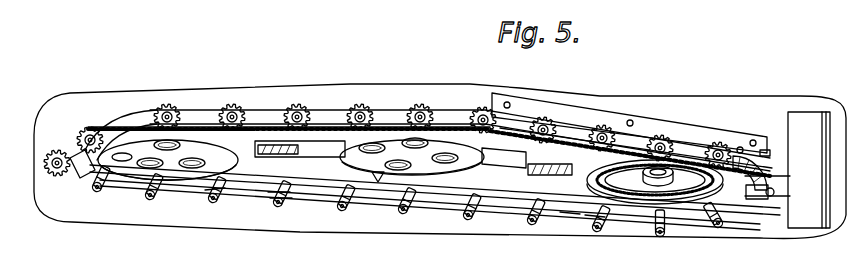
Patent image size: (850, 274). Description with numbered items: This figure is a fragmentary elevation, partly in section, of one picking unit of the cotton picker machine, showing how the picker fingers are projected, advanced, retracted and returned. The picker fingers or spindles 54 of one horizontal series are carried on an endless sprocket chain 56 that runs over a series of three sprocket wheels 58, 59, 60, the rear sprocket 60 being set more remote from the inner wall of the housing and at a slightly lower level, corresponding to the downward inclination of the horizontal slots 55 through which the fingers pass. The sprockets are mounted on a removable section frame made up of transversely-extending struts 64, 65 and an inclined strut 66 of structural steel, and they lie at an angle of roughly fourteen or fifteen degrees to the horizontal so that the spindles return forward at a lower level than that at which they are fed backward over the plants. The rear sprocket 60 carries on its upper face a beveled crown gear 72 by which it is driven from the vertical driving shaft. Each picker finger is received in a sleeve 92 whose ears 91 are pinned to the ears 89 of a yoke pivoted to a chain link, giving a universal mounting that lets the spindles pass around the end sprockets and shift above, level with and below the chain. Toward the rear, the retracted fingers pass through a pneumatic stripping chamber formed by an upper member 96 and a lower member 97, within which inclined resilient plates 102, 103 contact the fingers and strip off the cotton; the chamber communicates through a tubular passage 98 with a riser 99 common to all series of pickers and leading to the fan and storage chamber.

The sprocket roller 54 is at (80, 139).
The horizontal slots 55 is at (390, 110).
The endless sprocket chain 56 is at (85, 178).
The sprocket wheel 58 is at (168, 175).
The sprocket wheel 59 is at (378, 165).
The rear sprocket wheel 60 is at (700, 210).
The transversely-extending strut 64 is at (456, 156).
The transversely-extending strut 65 is at (300, 148).
The inclined strut 66 is at (517, 180).
The beveled crown gear 72 is at (640, 205).
The ears of the yoke 89 is at (283, 200).
The ears 91 is at (218, 200).
The sleeve 92 is at (283, 205).
The upper member of pneumatic chamber 96 is at (685, 141).
The lower member of pneumatic chamber 97 is at (510, 122).
The tubular passage 98 is at (762, 173).
The riser 99 is at (809, 170).
The resilient plate 102 is at (741, 147).
The resilient plate 103 is at (766, 150).